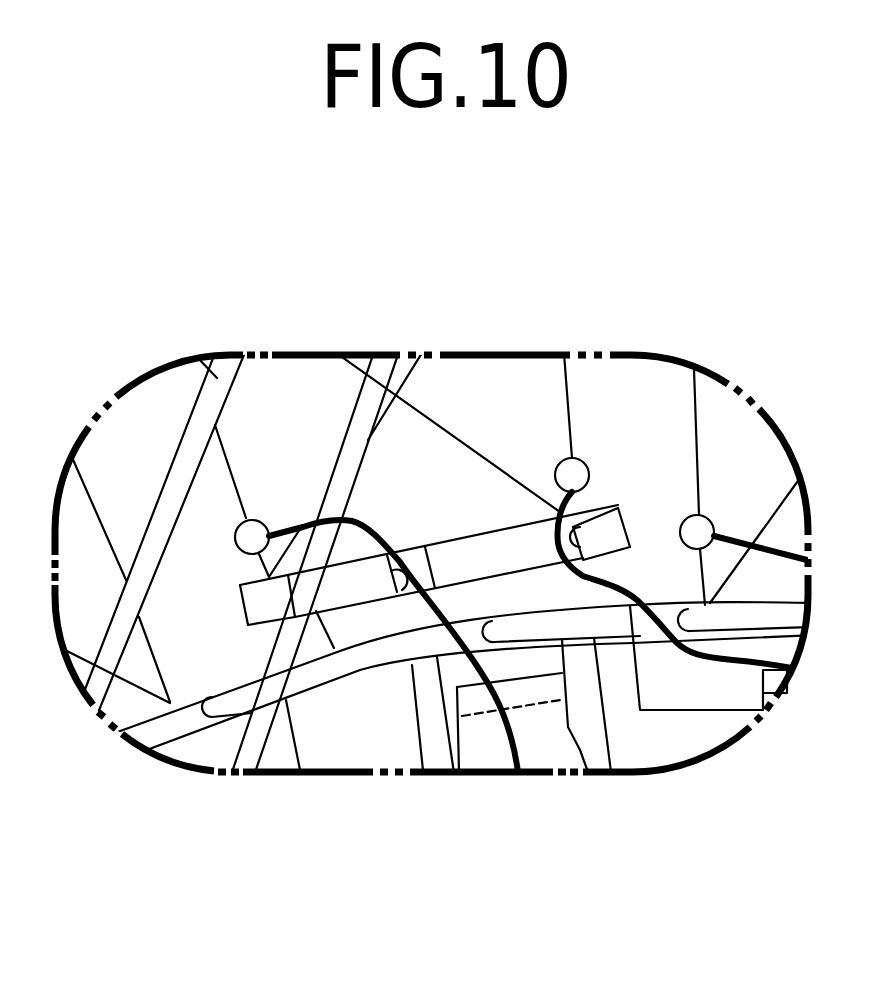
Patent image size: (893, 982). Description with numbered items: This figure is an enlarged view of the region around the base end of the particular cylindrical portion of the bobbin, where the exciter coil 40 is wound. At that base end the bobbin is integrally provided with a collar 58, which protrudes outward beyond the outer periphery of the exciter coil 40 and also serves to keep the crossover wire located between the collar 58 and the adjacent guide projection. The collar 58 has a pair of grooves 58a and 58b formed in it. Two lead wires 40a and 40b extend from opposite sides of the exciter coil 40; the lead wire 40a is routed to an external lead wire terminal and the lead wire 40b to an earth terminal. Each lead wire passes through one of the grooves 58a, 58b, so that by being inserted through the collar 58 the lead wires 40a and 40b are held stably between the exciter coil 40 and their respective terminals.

The exciter coil 40 is at (485, 398).
The lead wire 40a is at (507, 722).
The lead wire 40b is at (700, 660).
The collar 58 is at (253, 608).
The groove 58a is at (402, 590).
The groove 58b is at (580, 517).